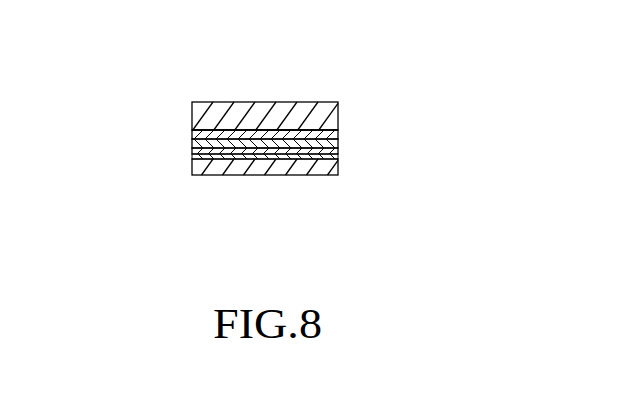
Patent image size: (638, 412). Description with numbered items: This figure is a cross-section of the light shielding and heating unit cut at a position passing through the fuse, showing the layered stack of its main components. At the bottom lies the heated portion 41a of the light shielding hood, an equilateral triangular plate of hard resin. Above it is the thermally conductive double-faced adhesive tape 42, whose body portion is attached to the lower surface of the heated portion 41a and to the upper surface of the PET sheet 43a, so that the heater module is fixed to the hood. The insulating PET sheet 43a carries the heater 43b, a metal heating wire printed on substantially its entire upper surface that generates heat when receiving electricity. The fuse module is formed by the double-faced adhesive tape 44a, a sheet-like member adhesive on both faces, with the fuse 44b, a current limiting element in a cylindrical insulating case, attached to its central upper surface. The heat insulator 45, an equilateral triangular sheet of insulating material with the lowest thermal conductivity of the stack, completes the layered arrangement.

The heated portion 41a is at (190, 173).
The double-faced adhesive tape 42 is at (192, 158).
The PET sheet 43a is at (338, 143).
The heater 43b is at (192, 150).
The double-faced adhesive tape 44a is at (192, 133).
The fuse 44b is at (273, 129).
The heat insulator 45 is at (338, 112).